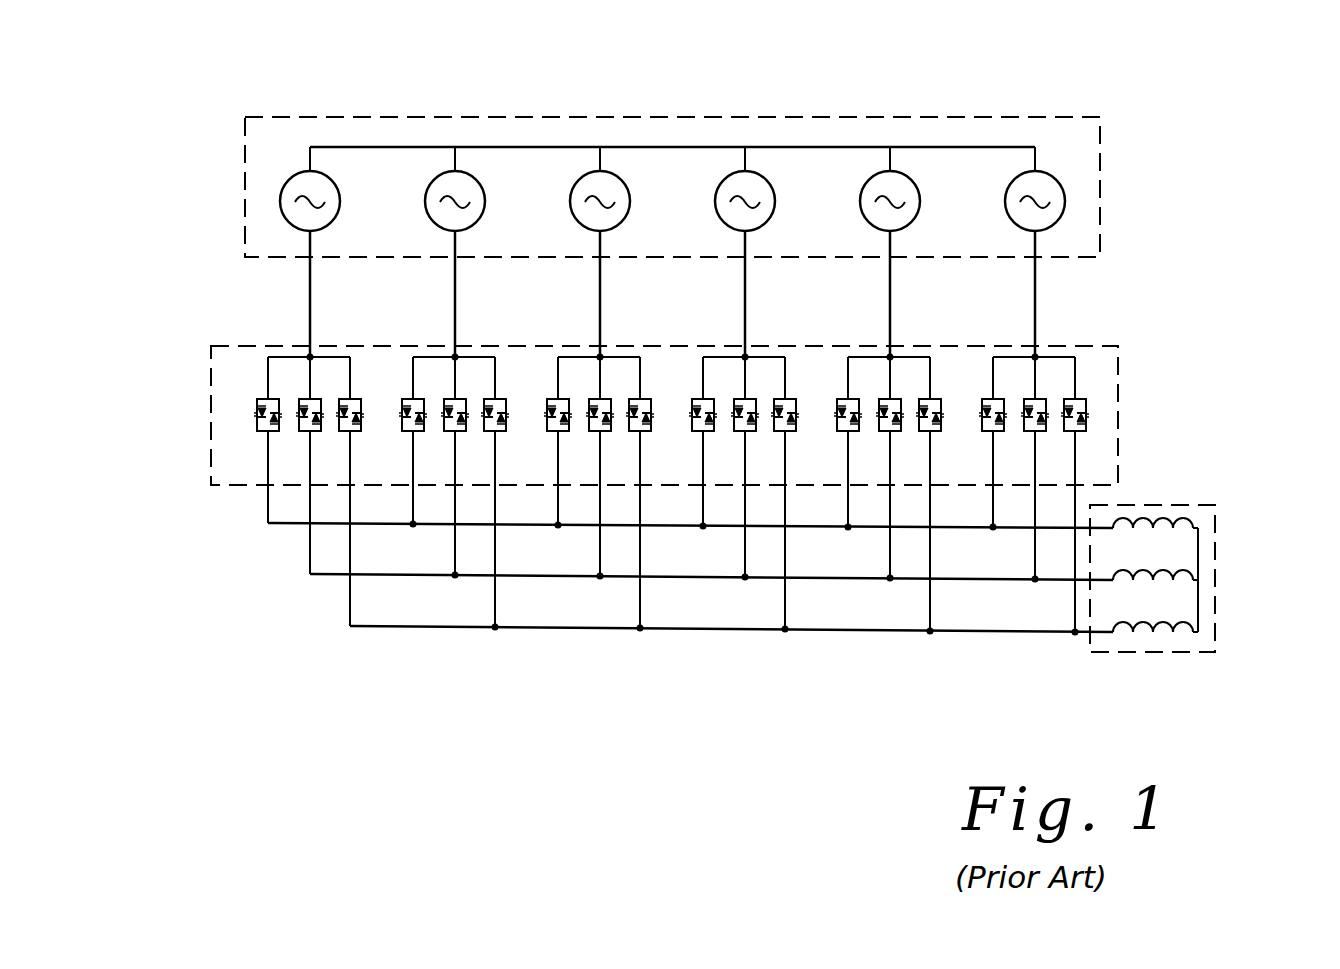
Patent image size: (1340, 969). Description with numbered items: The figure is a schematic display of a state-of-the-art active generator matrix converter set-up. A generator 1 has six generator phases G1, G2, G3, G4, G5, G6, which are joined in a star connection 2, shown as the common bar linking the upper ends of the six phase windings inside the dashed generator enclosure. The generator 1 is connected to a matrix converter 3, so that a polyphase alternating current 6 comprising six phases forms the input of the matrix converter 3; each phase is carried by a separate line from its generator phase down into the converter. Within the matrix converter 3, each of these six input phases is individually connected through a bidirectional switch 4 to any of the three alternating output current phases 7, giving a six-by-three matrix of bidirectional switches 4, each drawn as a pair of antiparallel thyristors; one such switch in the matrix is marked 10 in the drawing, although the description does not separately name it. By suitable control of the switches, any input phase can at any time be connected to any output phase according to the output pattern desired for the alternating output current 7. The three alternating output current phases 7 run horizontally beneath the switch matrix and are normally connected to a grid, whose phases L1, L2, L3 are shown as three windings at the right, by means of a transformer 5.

The generator 1 is at (1100, 193).
The star connection 2 is at (1037, 147).
The matrix converter 3 is at (1118, 418).
The bidirectional switch 4 is at (254, 383).
The transformer 5 is at (1191, 609).
The polyphase alternating current 6 is at (318, 318).
The alternating output current phases 7 is at (382, 523).
The antiparallel thyristor switch module 10 is at (1080, 405).
The generator phase G1 is at (305, 176).
The generator phase G2 is at (450, 176).
The generator phase G3 is at (595, 176).
The generator phase G4 is at (740, 176).
The generator phase G5 is at (885, 176).
The generator phase G6 is at (1030, 176).
The grid phase L1 is at (1165, 529).
The grid phase L2 is at (1165, 581).
The grid phase L3 is at (1163, 637).